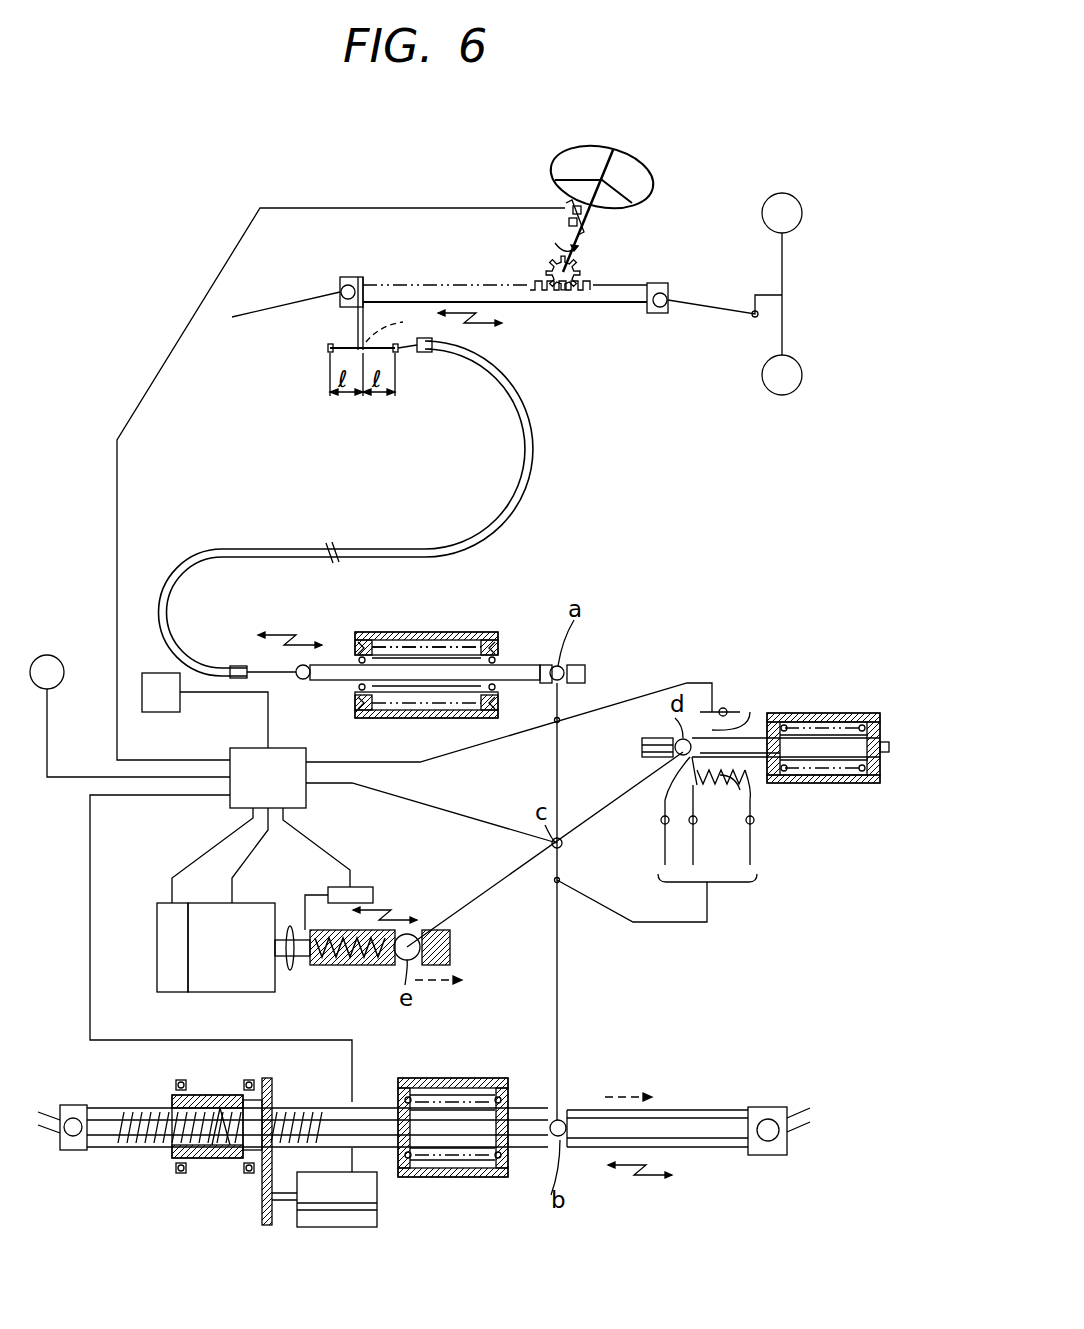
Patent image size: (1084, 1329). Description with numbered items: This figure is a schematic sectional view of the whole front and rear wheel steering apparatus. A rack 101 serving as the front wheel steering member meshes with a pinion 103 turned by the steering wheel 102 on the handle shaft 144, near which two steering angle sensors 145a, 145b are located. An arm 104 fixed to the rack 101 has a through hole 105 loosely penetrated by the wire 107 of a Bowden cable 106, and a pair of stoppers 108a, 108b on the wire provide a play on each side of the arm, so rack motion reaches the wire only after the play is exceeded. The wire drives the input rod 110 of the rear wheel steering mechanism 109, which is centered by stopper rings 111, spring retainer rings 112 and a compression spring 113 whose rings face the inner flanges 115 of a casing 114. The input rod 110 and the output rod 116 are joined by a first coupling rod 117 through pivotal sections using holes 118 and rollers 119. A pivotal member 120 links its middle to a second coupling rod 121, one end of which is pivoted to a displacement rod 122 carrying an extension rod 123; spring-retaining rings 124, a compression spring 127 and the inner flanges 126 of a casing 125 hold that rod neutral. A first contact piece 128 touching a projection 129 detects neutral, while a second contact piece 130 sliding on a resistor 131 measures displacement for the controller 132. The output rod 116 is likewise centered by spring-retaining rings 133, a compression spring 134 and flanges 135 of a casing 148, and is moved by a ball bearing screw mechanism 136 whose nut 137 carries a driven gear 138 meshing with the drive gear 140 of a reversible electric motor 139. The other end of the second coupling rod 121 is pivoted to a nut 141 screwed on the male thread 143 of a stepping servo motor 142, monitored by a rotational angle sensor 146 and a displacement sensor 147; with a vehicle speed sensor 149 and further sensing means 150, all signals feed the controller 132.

The rack 101 is at (446, 287).
The steering wheel 102 is at (568, 150).
The pinion 103 is at (582, 272).
The arm 104 is at (366, 320).
The through hole 105 is at (407, 324).
The Bowden cable 106 is at (531, 437).
The wire 107 is at (434, 345).
The stopper 108a is at (328, 348).
The stopper 108b is at (400, 352).
The rear wheel steering mechanism 109 is at (620, 656).
The input rod 110 is at (528, 665).
The stopper rings 111 is at (500, 665).
The spring retainer rings 112 is at (366, 645).
The compression spring 113 is at (445, 645).
The casing 114 is at (358, 633).
The inner flanges 115 is at (356, 645).
The output rod 116 is at (697, 1118).
The first coupling rod 117 is at (560, 945).
The holes 118 is at (578, 665).
The rollers 119 is at (557, 665).
The pivotal member 120 is at (563, 845).
The second coupling rod 121 is at (520, 888).
The displacement rod 122 is at (676, 757).
The extension rod 123 is at (812, 745).
The spring-retaining rings 124 is at (772, 715).
The casing 125 is at (836, 784).
The inner flanges 126 is at (765, 785).
The compression spring 127 is at (848, 712).
The first contact piece 128 is at (745, 712).
The projection 129 is at (722, 708).
The second contact piece 130 is at (752, 800).
The resistor 131 is at (733, 786).
The controller 132 is at (262, 748).
The spring-retaining rings 133 is at (400, 1110).
The compression spring 134 is at (475, 1085).
The flanges 135 is at (506, 1095).
The ball bearing screw mechanism 136 is at (172, 1155).
The nut 137 is at (200, 1095).
The driven gear 138 is at (270, 1175).
The reversible electric motor 139 is at (355, 1210).
The drive gear 140 is at (262, 1205).
The nut 141 is at (356, 965).
The stepping servo motor 142 is at (265, 983).
The male thread 143 is at (312, 965).
The handle shaft 144 is at (596, 232).
The steering angle sensor 145a is at (590, 213).
The steering angle sensor 145b is at (588, 226).
The rotational angle sensor 146 is at (168, 985).
The displacement sensor 147 is at (358, 887).
The casing 148 is at (460, 1178).
The vehicle speed sensor 149 is at (55, 686).
The sensor 150 is at (160, 708).